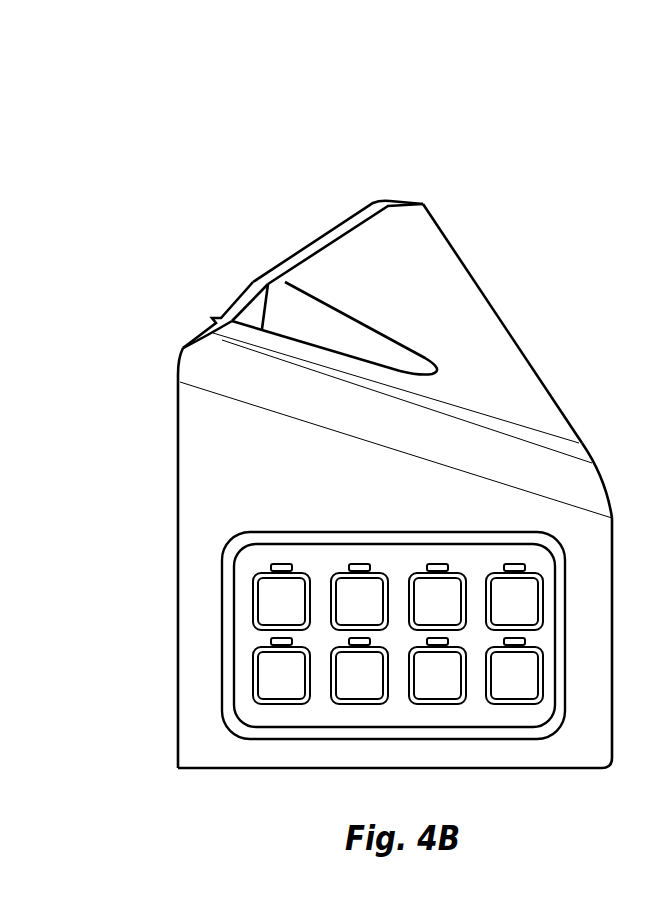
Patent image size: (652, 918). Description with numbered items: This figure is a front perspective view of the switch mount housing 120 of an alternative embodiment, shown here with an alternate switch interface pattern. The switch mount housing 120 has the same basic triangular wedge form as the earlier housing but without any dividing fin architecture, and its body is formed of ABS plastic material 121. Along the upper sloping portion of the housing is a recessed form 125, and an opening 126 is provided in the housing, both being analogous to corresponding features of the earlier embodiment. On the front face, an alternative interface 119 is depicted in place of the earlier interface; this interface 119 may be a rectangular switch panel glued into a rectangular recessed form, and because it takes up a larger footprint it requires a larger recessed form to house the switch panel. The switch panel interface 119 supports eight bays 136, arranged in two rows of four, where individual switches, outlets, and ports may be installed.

The interface 119 is at (366, 526).
The switch mount housing 120 is at (310, 233).
The ABS plastic material 121 is at (453, 336).
The recessed form 125 is at (314, 334).
The opening 126 is at (252, 325).
The bays 136 is at (366, 675).